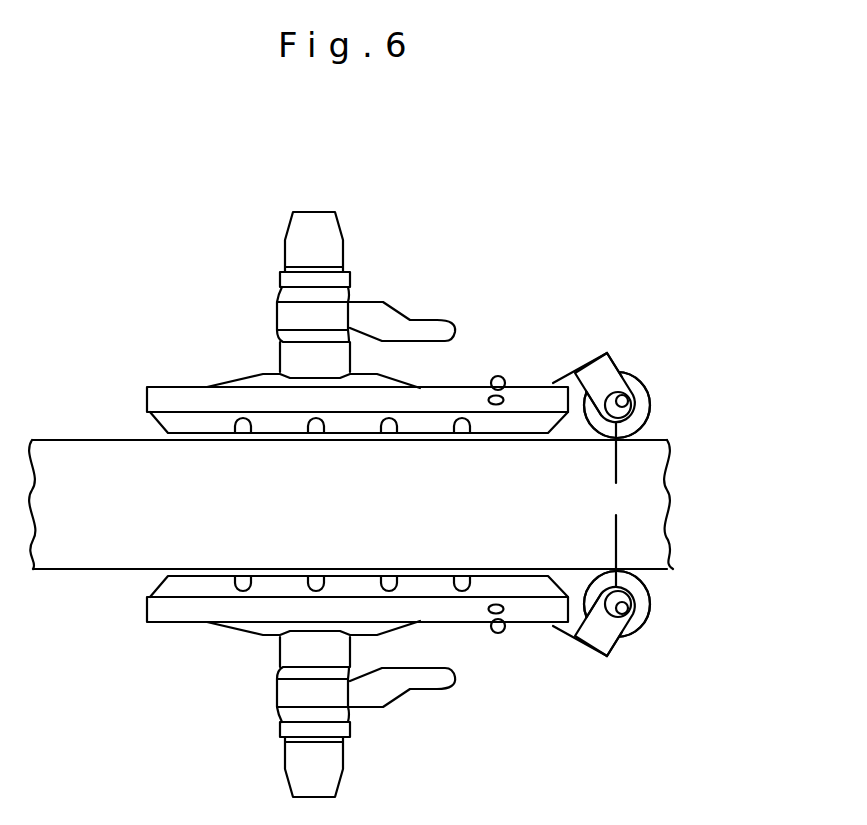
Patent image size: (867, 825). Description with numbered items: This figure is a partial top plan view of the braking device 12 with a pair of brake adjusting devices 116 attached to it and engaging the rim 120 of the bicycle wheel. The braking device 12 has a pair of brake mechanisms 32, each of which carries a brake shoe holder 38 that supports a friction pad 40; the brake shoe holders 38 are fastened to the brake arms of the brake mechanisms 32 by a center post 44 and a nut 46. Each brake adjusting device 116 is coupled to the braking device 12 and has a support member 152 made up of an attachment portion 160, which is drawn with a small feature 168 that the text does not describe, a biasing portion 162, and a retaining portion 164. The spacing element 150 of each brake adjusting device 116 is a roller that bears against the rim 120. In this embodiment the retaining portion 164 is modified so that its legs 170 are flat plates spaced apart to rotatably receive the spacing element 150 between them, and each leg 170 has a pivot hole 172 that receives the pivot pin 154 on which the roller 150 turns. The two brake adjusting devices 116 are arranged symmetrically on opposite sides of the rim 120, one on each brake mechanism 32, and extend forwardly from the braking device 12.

The braking device 12 is at (614, 210).
The brake mechanisms 32 is at (379, 318).
The brake shoe holders 38 is at (174, 386).
The friction pads 40 is at (153, 422).
The center post 44 is at (280, 358).
The nut 46 is at (343, 233).
The brake adjusting devices 116 is at (654, 357).
The rail 120 is at (666, 430).
The spacing elements 150 is at (647, 383).
The support member 152 is at (556, 367).
The pivot pin 154 is at (614, 504).
The attachment portion 160 is at (519, 386).
The biasing portion 162 is at (571, 374).
The retaining portion 164 is at (621, 352).
The hole 168 is at (491, 378).
The legs 170 is at (586, 393).
The pivot hole 172 is at (636, 402).